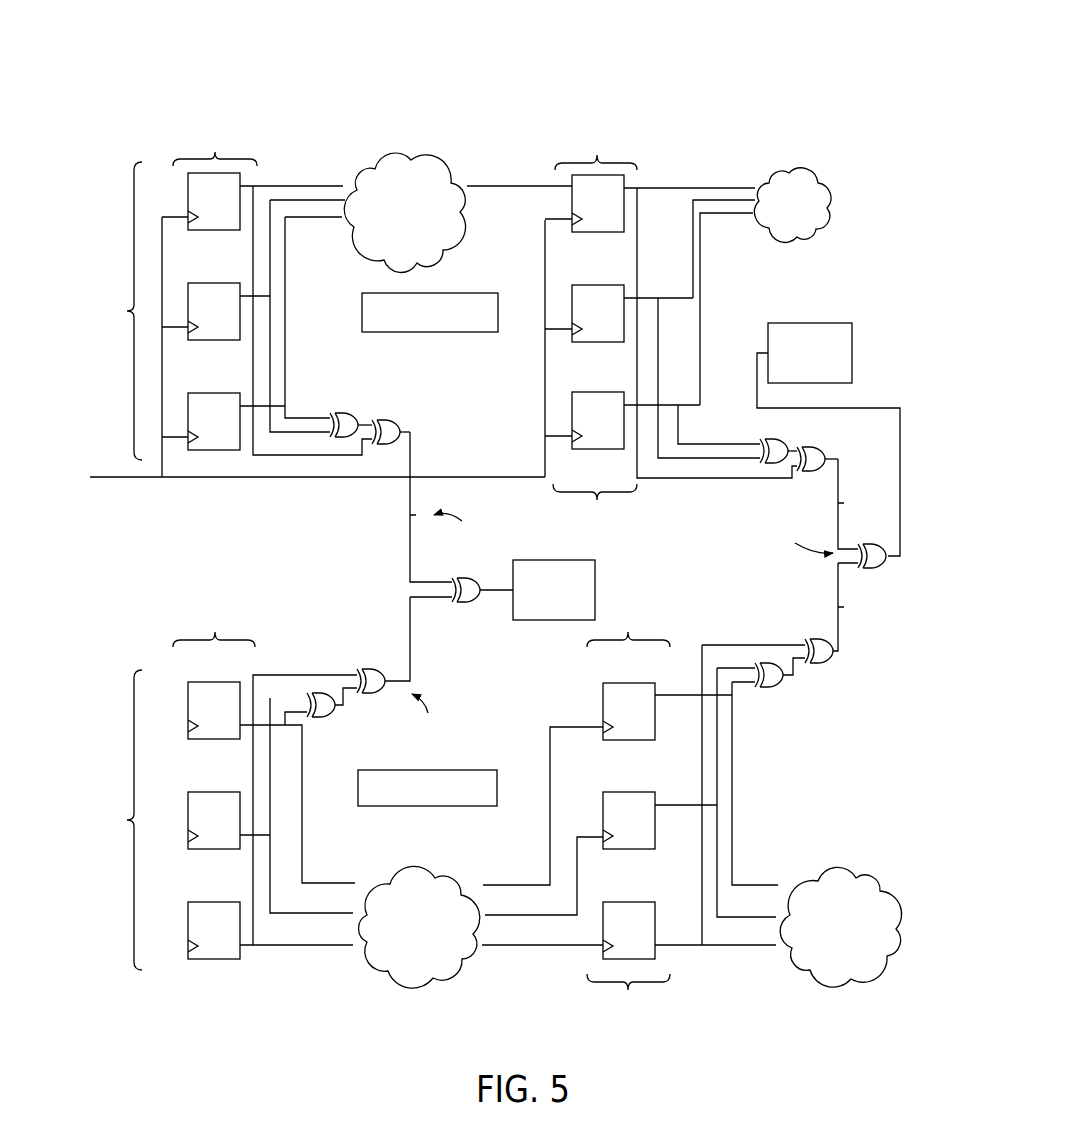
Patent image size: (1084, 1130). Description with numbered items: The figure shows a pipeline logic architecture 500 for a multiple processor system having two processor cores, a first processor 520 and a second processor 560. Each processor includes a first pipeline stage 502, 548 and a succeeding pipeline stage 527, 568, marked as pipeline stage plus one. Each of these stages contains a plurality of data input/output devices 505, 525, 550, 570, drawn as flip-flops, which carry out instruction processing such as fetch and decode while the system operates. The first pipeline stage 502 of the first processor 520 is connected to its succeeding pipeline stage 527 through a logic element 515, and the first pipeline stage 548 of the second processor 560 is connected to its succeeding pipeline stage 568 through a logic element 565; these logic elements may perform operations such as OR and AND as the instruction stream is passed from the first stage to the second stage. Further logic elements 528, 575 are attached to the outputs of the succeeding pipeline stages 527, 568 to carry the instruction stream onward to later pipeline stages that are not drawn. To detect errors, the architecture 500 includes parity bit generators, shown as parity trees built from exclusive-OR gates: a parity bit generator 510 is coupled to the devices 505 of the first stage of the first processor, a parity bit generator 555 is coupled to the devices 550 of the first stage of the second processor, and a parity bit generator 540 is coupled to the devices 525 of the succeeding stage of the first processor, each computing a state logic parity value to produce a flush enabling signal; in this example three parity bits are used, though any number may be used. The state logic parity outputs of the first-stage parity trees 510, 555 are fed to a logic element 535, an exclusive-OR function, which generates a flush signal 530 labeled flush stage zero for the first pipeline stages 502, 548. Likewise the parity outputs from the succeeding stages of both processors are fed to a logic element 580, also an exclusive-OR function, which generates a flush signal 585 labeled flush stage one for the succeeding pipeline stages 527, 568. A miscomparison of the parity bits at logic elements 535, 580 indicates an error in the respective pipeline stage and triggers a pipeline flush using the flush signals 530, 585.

The pipeline logic architecture 500 is at (530, 70).
The first pipeline stage 502 is at (215, 289).
The data input/output devices 505 is at (313, 319).
The parity bit generator 510 is at (368, 410).
The logic element 515 is at (428, 147).
The processor 1 520 is at (437, 334).
The data input/output devices 525 is at (591, 373).
The succeeding pipeline stage 527 is at (596, 289).
The logic element 528 is at (808, 166).
The flush signal 530 is at (595, 580).
The logic element 535 is at (463, 603).
The parity bit generator 540 is at (716, 428).
The first pipeline stage 548 is at (213, 782).
The data input/output devices 550 is at (111, 820).
The parity bit generator 555 is at (345, 658).
The processor 2 560 is at (402, 806).
The logic element 565 is at (403, 993).
The succeeding pipeline stage 568 is at (617, 784).
The data input/output devices 570 is at (628, 996).
The logic element 575 is at (830, 993).
The logic element 580 is at (867, 538).
The flush signal 585 is at (822, 323).